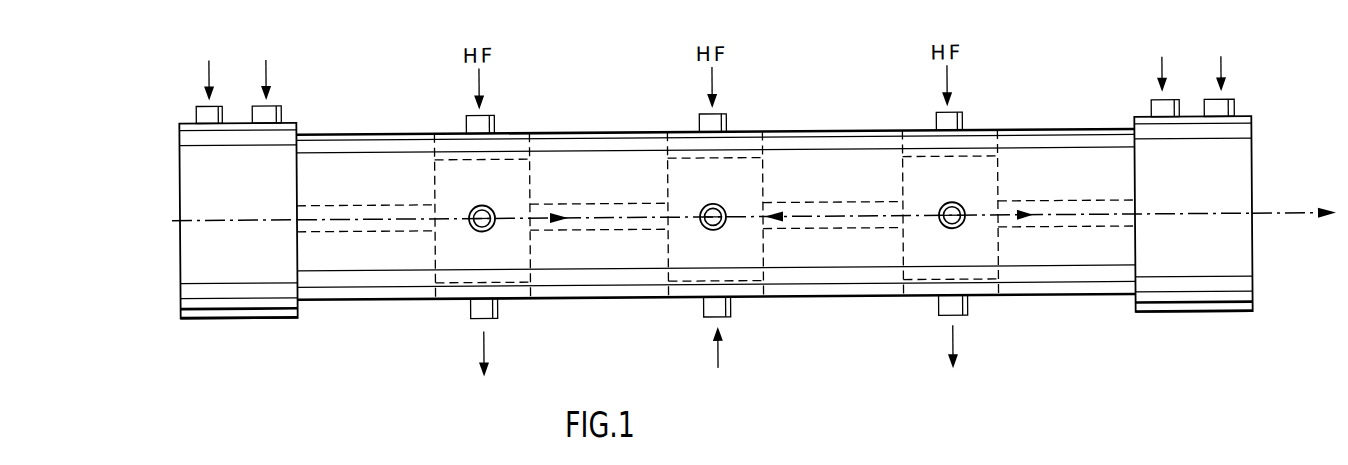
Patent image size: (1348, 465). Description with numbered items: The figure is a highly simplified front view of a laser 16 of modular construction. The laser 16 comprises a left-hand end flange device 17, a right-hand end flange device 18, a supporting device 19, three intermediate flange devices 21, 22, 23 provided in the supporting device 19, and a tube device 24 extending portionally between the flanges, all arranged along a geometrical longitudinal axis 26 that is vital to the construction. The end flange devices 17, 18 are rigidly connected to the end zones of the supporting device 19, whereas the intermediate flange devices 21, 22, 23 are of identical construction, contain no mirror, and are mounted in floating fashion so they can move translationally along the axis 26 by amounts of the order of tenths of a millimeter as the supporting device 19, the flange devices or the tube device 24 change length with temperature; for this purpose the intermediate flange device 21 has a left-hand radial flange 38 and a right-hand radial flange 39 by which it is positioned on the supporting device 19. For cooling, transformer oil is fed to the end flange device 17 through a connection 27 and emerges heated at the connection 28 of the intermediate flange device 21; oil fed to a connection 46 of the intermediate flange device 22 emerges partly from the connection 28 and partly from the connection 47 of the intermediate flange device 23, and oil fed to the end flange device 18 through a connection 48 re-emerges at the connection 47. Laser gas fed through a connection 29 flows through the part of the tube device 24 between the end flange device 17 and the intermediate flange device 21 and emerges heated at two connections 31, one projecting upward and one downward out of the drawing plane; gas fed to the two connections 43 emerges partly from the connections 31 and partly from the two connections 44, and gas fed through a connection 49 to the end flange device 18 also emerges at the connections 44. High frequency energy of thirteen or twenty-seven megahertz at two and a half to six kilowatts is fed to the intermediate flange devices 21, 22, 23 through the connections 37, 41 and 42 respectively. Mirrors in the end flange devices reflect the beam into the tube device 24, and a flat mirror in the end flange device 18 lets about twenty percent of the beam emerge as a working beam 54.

The laser 16 is at (808, 410).
The left-hand end flange device 17 is at (245, 338).
The right-hand end flange device 18 is at (1163, 333).
The supporting device 19 is at (822, 142).
The intermediate flange device 21 is at (430, 268).
The intermediate flange device 22 is at (683, 255).
The intermediate flange device 23 is at (917, 252).
The tube device 24 is at (350, 205).
The geometrical longitudinal axis 26 is at (238, 215).
The connection 27 is at (200, 116).
The connection 28 is at (496, 315).
The connection 29 is at (281, 116).
The connections 31 is at (468, 226).
The connection 37 is at (473, 130).
The left-hand radial flange 38 is at (430, 155).
The right-hand radial flange 39 is at (533, 288).
The connection 41 is at (727, 124).
The connection 42 is at (963, 122).
The connections 43 is at (703, 225).
The connections 44 is at (939, 221).
The connection 46 is at (730, 312).
The connection 47 is at (967, 311).
The connection 48 is at (1152, 105).
The connection 49 is at (1237, 105).
The working beam 54 is at (1277, 218).